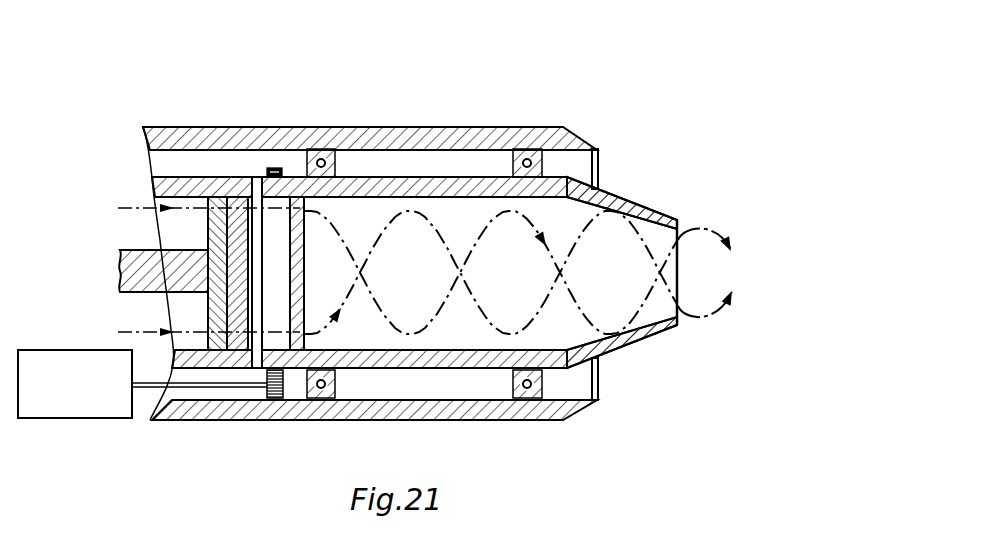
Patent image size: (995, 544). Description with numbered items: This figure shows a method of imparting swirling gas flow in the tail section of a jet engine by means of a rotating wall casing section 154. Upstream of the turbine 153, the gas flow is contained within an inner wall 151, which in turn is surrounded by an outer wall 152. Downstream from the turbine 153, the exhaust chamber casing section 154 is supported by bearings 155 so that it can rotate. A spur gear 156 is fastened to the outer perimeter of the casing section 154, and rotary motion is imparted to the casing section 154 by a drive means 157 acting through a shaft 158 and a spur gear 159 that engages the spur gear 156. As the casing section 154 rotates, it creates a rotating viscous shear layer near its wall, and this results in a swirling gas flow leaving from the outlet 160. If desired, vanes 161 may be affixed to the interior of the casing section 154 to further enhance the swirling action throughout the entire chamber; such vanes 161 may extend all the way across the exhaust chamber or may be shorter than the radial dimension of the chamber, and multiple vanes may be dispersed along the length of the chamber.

The inner wall 151 is at (154, 182).
The outer wall 152 is at (237, 127).
The turbine 153 is at (208, 241).
The casing section 154 is at (648, 341).
The bearings 155 is at (336, 163).
The spur gear 156 is at (268, 169).
The drive means 157 is at (72, 418).
The shaft 158 is at (153, 390).
The spur gear 159 is at (273, 400).
The outlet 160 is at (677, 220).
The vanes 161 is at (308, 283).